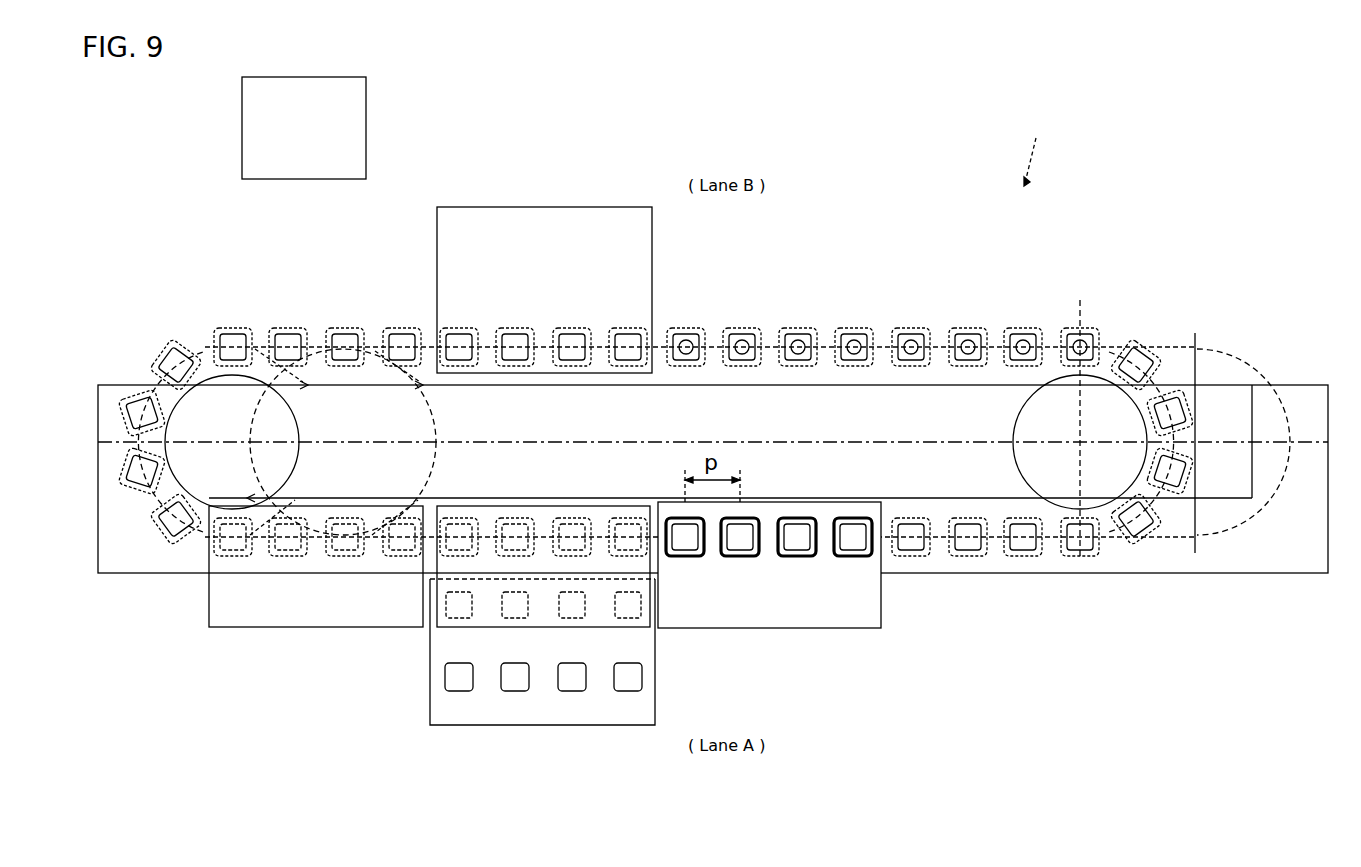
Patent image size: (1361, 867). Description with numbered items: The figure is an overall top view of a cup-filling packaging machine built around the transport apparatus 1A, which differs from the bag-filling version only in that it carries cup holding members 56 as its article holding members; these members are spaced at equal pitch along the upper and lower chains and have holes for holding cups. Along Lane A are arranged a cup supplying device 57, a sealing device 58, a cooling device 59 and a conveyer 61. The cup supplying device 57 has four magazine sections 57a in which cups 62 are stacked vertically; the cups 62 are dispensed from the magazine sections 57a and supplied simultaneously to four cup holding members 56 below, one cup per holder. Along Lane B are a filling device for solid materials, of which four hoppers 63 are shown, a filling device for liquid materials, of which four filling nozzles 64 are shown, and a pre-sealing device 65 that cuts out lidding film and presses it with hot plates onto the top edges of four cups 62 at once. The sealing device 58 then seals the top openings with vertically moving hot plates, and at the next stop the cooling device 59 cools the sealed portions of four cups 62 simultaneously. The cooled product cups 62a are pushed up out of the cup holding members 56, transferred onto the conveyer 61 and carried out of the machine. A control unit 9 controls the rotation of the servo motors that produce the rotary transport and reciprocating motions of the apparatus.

The control unit 9 is at (354, 127).
The pre-sealing device 65 is at (614, 205).
The filling nozzles 64 is at (857, 334).
The hoppers 63 is at (1082, 332).
The transport apparatus 1A is at (1041, 149).
The sealing device 58 is at (240, 629).
The cooling device 59 is at (451, 629).
The conveyer 61 is at (489, 714).
The product cups 62a is at (573, 690).
The cup supplying device 57 is at (795, 629).
The magazine sections 57a is at (853, 557).
The cup holding members 56 is at (911, 556).
The cups 62 is at (968, 547).